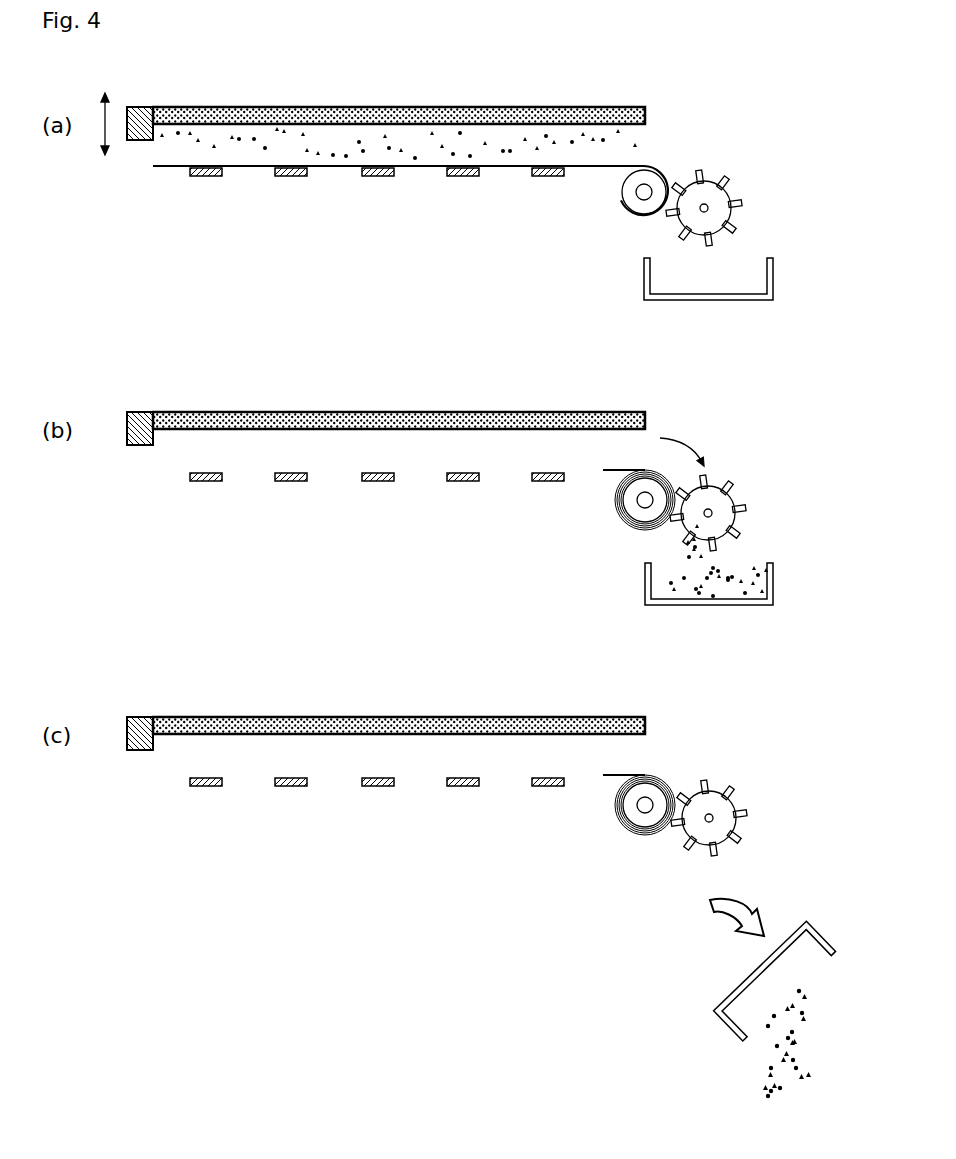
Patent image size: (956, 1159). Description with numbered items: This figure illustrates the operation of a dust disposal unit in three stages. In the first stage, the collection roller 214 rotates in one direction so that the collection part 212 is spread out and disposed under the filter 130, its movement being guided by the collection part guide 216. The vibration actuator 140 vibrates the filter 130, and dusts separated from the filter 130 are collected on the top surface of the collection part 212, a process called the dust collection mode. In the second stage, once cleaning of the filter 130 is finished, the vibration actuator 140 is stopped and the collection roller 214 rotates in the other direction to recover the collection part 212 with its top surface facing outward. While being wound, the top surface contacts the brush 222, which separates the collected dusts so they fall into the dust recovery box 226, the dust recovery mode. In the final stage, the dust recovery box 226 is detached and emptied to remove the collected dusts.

The filter 130 is at (360, 117).
The vibration actuator 140 is at (141, 114).
The collection part 212 is at (503, 169).
The collection roller 214 is at (655, 186).
The collection part guide 216 is at (376, 177).
The brush 222 is at (722, 182).
The dust recovery box 226 is at (773, 278).